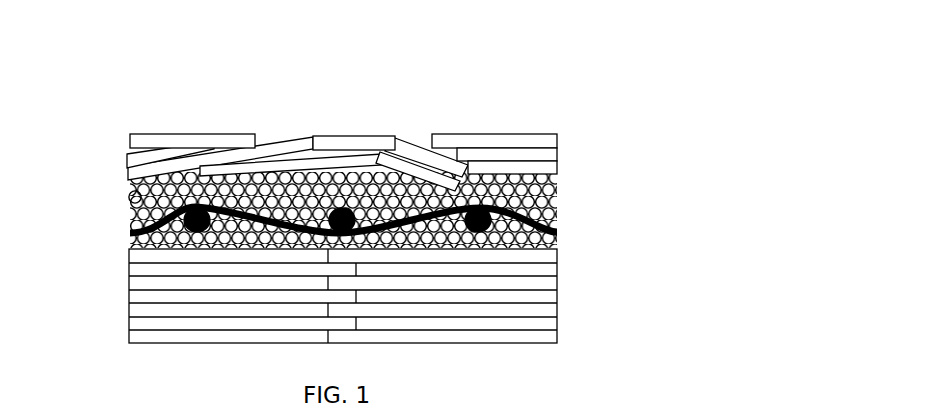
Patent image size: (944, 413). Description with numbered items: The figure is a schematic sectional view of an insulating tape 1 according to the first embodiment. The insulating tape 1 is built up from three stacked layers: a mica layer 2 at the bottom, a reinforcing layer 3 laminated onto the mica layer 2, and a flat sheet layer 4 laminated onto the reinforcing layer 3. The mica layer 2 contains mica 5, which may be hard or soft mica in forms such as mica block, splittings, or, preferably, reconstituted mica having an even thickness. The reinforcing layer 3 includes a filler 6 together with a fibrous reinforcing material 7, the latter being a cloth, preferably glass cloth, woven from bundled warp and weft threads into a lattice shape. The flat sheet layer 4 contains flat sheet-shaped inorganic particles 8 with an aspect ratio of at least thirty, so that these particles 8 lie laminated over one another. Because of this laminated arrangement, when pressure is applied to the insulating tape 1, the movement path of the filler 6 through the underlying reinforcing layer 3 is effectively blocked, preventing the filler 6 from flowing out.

The insulating tape 1 is at (338, 171).
The mica layer 2 is at (338, 295).
The reinforcing layer 3 is at (338, 203).
The flat sheet layer 4 is at (375, 130).
The mica 5 is at (142, 298).
The filler 6 is at (129, 193).
The fibrous reinforcing material 7 is at (130, 233).
The flat sheet-shaped inorganic particles 8 is at (355, 143).